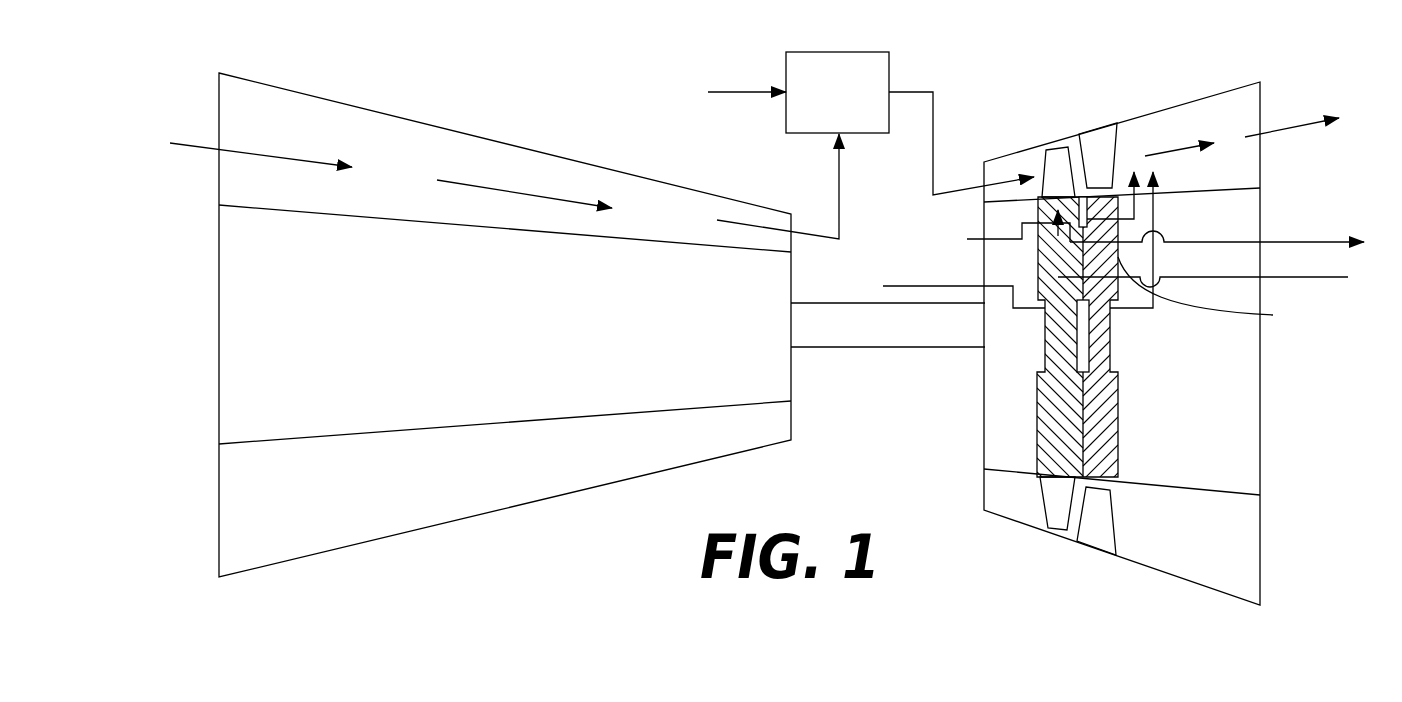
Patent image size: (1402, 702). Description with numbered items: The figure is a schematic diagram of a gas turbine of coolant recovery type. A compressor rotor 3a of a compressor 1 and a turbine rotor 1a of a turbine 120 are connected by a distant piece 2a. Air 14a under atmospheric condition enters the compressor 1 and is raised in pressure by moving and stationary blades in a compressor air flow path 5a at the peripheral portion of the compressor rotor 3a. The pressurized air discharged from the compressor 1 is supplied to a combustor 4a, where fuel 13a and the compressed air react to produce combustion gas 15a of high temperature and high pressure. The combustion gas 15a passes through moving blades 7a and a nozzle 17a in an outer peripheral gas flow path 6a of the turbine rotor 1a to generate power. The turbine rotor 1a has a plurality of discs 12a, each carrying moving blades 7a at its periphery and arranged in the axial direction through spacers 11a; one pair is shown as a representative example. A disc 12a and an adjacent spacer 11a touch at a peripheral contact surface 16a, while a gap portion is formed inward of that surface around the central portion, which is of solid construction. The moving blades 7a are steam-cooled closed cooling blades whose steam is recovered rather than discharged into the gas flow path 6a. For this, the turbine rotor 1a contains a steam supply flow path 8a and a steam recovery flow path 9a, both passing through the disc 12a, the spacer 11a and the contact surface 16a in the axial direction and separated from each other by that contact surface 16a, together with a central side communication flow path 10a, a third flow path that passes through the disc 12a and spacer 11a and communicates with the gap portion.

The compressor 1 is at (543, 142).
The turbine rotor 1a is at (1247, 388).
The distant piece 2a is at (901, 341).
The compressor rotor 3a is at (217, 350).
The combustor 4a is at (855, 106).
The compressor air flow path 5a is at (383, 132).
The gas flow path 6a is at (1185, 118).
The moving blade 7a is at (1053, 153).
The steam supply flow path 8a is at (1323, 277).
The steam recovery flow path 9a is at (1317, 242).
The central side communication flow path 10a is at (942, 286).
The spacer 11a is at (1108, 354).
The disc 12a is at (1043, 397).
The fuel 13a is at (726, 92).
The air 14a is at (200, 147).
The combustion gas 15a is at (933, 125).
The contact surface 16a is at (1224, 294).
The nozzle 17a is at (1098, 147).
The turbine 120 is at (1120, 570).